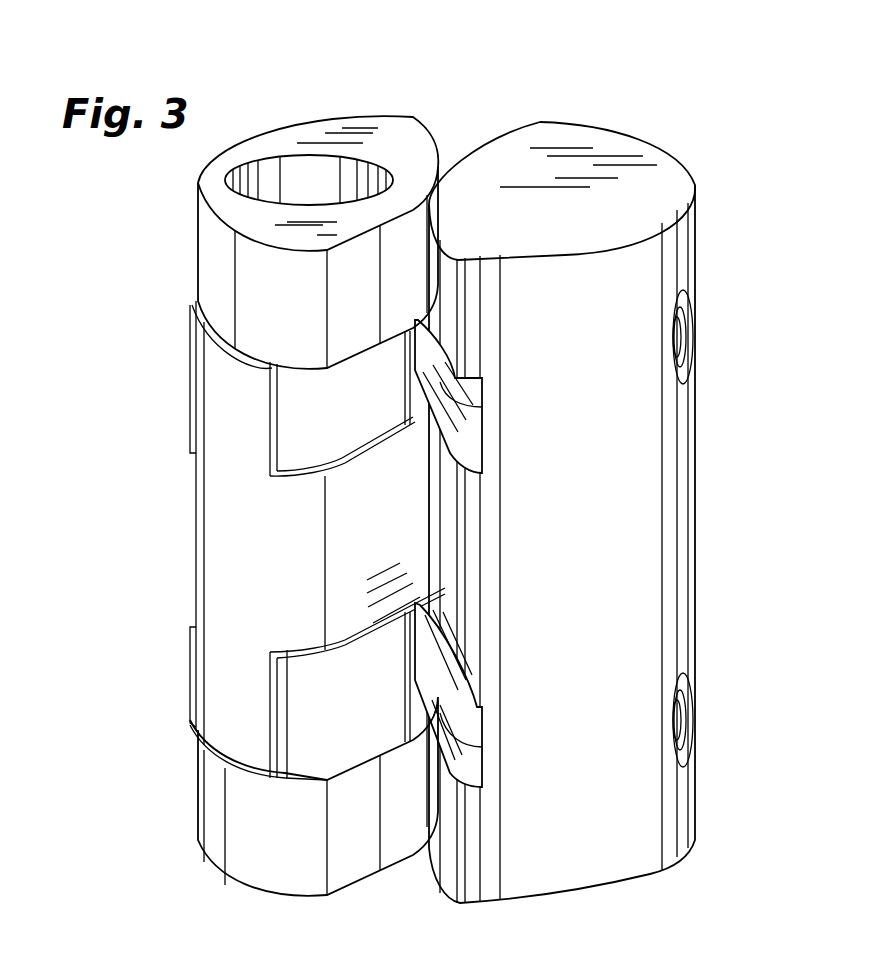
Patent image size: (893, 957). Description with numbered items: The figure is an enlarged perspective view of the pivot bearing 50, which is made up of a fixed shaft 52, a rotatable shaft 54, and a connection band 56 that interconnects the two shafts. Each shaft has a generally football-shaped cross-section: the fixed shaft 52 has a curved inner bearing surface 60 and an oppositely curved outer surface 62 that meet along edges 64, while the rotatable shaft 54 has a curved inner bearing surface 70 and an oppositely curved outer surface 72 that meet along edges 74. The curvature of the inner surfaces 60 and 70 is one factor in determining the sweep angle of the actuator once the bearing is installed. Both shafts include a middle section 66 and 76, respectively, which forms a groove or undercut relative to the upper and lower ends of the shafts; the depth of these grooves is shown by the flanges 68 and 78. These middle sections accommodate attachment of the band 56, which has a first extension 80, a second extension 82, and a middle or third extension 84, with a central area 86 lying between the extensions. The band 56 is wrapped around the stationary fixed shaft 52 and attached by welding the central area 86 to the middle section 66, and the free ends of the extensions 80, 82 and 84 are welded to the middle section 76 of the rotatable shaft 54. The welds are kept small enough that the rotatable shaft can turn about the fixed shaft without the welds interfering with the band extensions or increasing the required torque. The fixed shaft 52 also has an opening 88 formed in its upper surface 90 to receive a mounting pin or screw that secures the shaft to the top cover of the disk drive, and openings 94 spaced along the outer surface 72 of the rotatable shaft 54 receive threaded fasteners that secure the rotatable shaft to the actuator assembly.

The pivot bearing 50 is at (490, 108).
The fixed shaft 52 is at (170, 278).
The rotatable shaft 54 is at (742, 196).
The connection band 56 is at (174, 404).
The inner bearing surface 60 is at (373, 310).
The outer surface 62 is at (293, 290).
The edges 64 is at (413, 117).
The middle section 66 is at (343, 450).
The flange 68 is at (370, 352).
The inner bearing surface 70 is at (443, 262).
The outer surface 72 is at (603, 350).
The edges 74 is at (541, 121).
The middle section 76 is at (462, 627).
The flange 78 is at (470, 408).
The first extension 80 is at (192, 362).
The second extension 82 is at (191, 680).
The third extension 84 is at (421, 540).
The central area 86 is at (258, 585).
The opening 88 is at (308, 178).
The upper surface 90 is at (233, 163).
The openings 94 is at (685, 340).